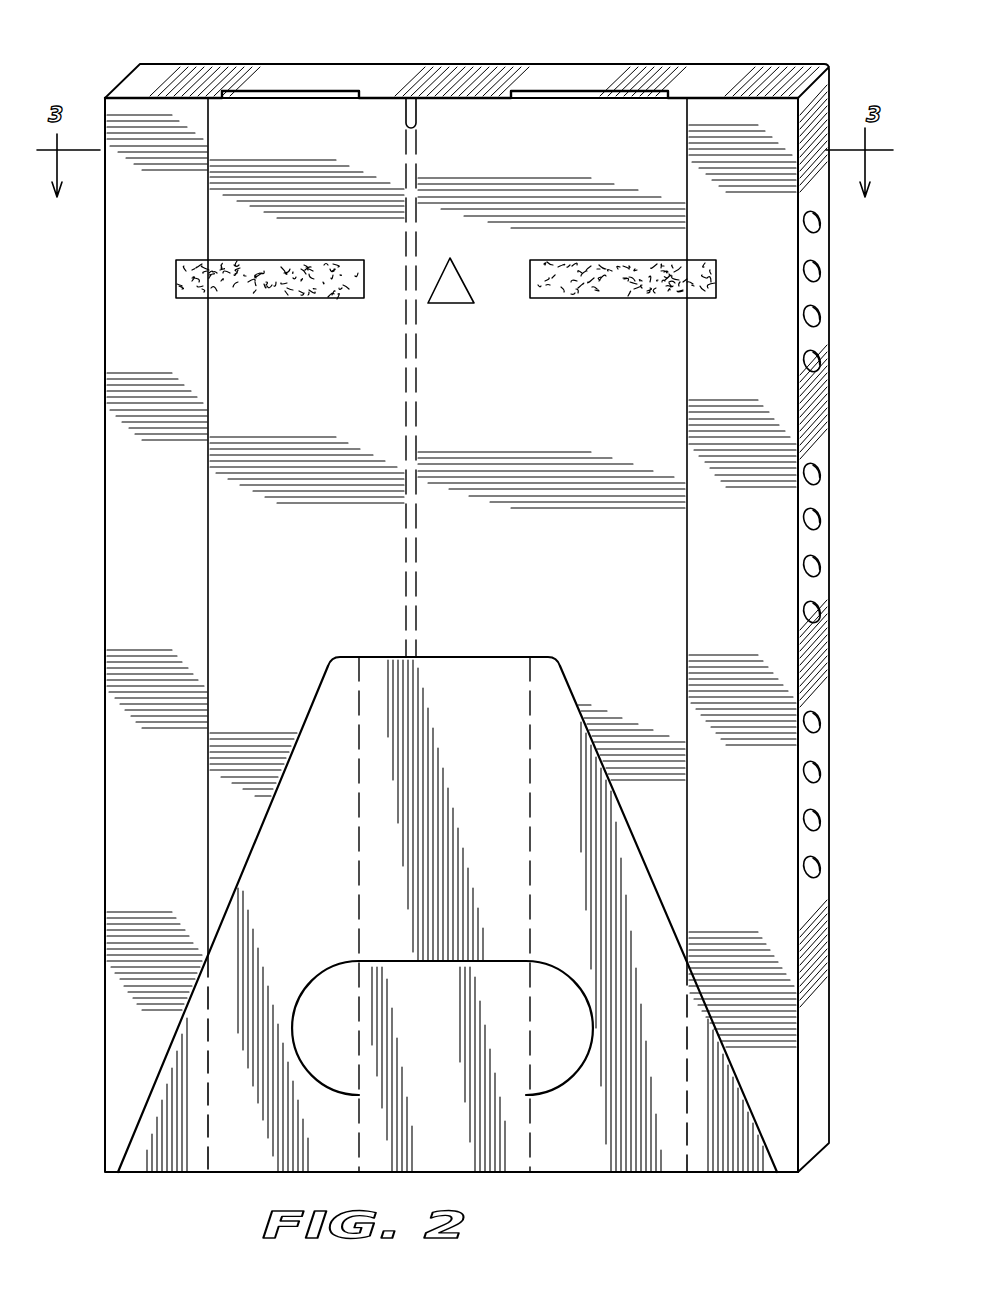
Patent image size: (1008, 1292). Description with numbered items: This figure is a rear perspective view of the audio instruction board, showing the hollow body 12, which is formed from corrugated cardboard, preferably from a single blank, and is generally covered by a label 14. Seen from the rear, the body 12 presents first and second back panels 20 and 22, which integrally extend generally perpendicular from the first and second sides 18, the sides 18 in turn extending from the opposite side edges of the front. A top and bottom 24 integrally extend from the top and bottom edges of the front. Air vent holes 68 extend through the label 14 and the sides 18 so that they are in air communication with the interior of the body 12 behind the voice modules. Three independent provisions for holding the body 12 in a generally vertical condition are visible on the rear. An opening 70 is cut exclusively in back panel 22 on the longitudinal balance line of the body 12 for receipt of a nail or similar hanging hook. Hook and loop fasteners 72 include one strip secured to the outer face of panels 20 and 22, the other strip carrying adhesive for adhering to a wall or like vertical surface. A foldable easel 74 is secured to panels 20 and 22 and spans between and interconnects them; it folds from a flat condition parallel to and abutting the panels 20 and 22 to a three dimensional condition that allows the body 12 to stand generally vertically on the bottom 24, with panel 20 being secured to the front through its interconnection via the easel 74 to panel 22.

The hollow body 12 is at (482, 120).
The label 14 is at (762, 263).
The sides 18 is at (800, 435).
The first back panel 20 is at (265, 118).
The second back panel 22 is at (600, 128).
The top and bottom 24 is at (402, 73).
The air vent holes 68 is at (822, 810).
The opening 70 is at (455, 293).
The hook and loop fasteners 72 is at (305, 285).
The foldable easel 74 is at (490, 673).